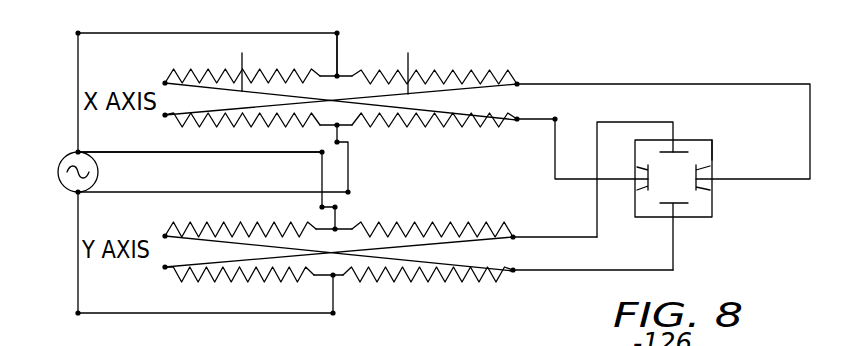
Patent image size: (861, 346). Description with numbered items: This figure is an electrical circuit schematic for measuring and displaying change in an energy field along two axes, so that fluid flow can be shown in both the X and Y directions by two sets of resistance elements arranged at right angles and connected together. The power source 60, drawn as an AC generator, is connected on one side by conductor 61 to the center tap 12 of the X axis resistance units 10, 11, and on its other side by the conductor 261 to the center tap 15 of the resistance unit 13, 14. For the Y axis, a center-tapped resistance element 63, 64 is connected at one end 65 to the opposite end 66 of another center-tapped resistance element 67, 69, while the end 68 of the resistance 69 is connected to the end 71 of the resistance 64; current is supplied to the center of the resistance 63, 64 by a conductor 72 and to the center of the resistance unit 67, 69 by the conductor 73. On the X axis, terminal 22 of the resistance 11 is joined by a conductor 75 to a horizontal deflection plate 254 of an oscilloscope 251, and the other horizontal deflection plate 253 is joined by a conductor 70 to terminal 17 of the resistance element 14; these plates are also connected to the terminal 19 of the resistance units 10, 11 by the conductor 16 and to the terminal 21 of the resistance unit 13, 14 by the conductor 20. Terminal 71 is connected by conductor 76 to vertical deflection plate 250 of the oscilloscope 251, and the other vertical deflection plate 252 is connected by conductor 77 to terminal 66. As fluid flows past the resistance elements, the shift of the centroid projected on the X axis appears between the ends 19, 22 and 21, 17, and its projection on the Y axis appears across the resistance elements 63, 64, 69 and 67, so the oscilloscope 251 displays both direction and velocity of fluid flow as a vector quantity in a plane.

The conductor 61 is at (181, 33).
The terminal 19 is at (165, 82).
The resistance unit 10 is at (266, 75).
The conductor 16 is at (224, 65).
The center tap 12 is at (341, 67).
The resistance 11 is at (446, 73).
The conductor 20 is at (422, 62).
The terminal 22 is at (517, 84).
The conductor 75 is at (588, 84).
The terminal 21 is at (165, 115).
The resistance unit 13 is at (263, 126).
The resistance element 14 is at (451, 129).
The center tap 15 is at (338, 127).
The conductor 72 is at (322, 177).
The terminal 17 is at (518, 121).
The conductor 70 is at (572, 179).
The conductor 76 is at (618, 122).
The vertical deflection plate 250 is at (677, 138).
The oscilloscope 251 is at (713, 139).
The horizontal deflection plate 254 is at (700, 171).
The horizontal deflection plate 253 is at (640, 190).
The vertical deflection plate 252 is at (681, 228).
The conductor 77 is at (673, 270).
The terminal 71 is at (513, 237).
The power source 60 is at (67, 188).
The conductor 261 is at (147, 200).
The end 65 is at (165, 222).
The resistance element 63 is at (247, 221).
The resistance 64 is at (467, 222).
The end 66 is at (517, 272).
The end 68 is at (165, 267).
The resistance 69 is at (278, 278).
The resistance element 67 is at (448, 278).
The conductor 73 is at (260, 313).